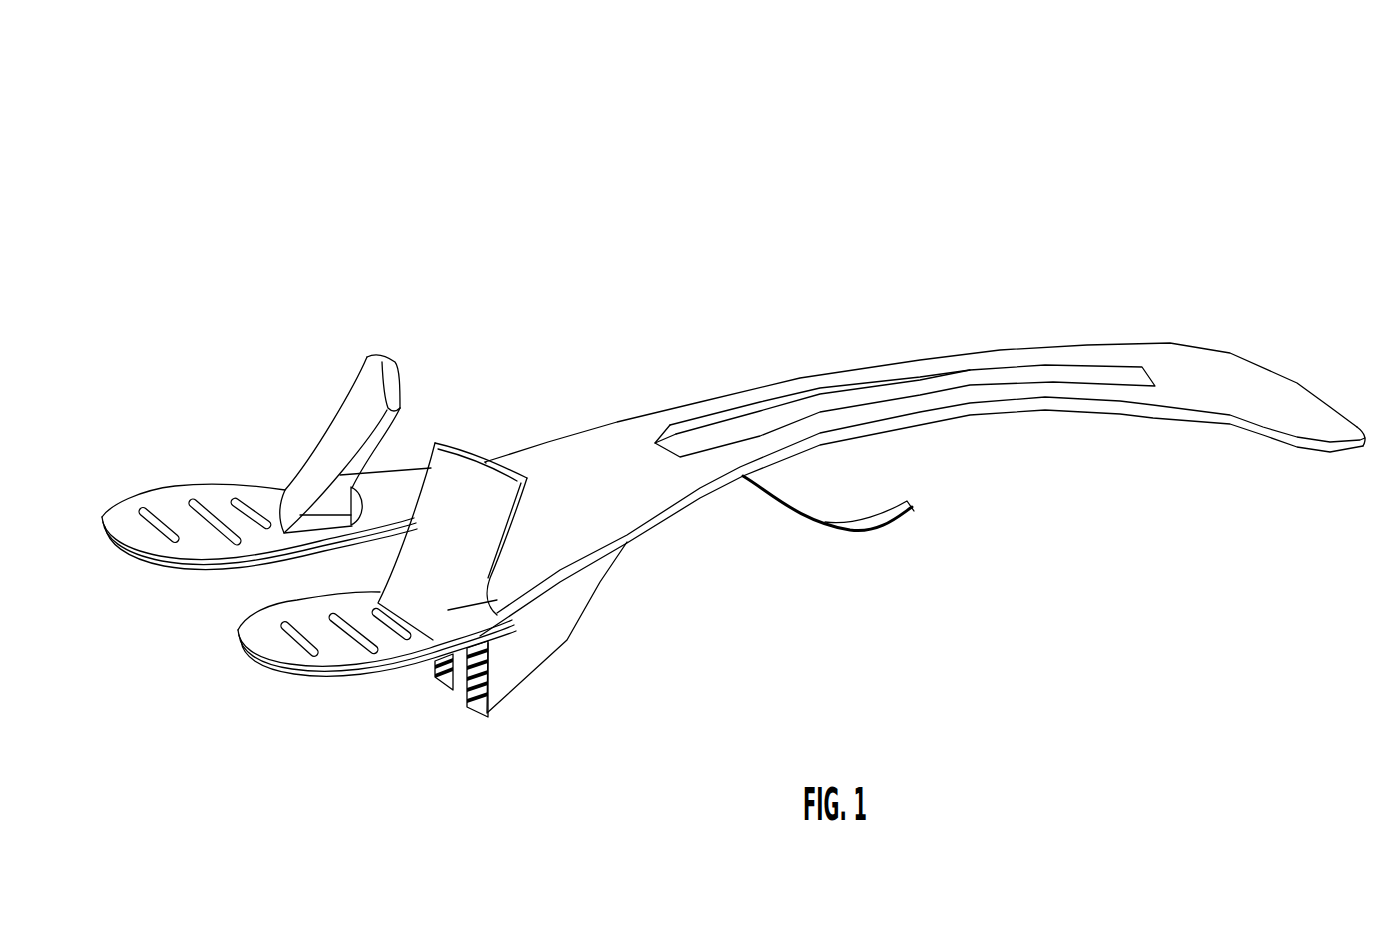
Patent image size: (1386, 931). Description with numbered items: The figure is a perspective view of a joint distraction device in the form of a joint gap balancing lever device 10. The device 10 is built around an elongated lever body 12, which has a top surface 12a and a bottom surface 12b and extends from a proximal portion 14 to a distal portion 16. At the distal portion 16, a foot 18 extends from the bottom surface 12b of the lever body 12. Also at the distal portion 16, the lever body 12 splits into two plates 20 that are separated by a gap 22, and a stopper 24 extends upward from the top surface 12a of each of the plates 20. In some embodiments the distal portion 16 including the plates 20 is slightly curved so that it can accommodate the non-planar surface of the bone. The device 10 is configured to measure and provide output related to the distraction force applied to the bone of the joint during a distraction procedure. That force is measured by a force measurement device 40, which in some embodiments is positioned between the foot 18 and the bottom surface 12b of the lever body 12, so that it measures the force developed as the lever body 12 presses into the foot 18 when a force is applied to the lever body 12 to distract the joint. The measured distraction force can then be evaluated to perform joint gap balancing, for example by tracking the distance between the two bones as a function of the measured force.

The joint gap balancing lever device 10 is at (874, 133).
The lever body 12 is at (785, 378).
The top surface 12a is at (1090, 350).
The bottom surface 12b is at (1068, 413).
The proximal portion 14 is at (1257, 382).
The distal portion 16 is at (533, 453).
The foot 18 is at (565, 642).
The plates 20 is at (170, 487).
The gap 22 is at (372, 557).
The stopper 24 is at (327, 433).
The force measurement device 40 is at (833, 530).